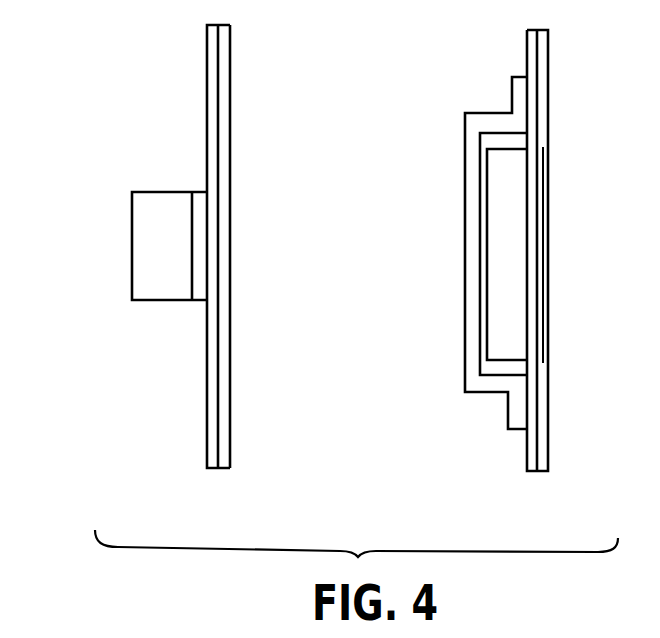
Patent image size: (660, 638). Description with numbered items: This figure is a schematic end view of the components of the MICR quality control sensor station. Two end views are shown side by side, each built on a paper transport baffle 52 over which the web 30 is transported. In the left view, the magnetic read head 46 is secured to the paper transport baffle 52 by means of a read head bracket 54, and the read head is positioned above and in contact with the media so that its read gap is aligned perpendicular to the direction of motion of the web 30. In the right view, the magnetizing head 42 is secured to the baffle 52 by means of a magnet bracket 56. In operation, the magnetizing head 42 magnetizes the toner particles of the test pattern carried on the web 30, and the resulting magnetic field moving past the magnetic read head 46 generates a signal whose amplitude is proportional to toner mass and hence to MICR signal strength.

The web 30 is at (219, 473).
The magnetizing head 42 is at (548, 210).
The magnetic read head 46 is at (230, 218).
The paper transport baffle 52 is at (208, 109).
The read head bracket 54 is at (198, 302).
The magnet bracket 56 is at (504, 401).